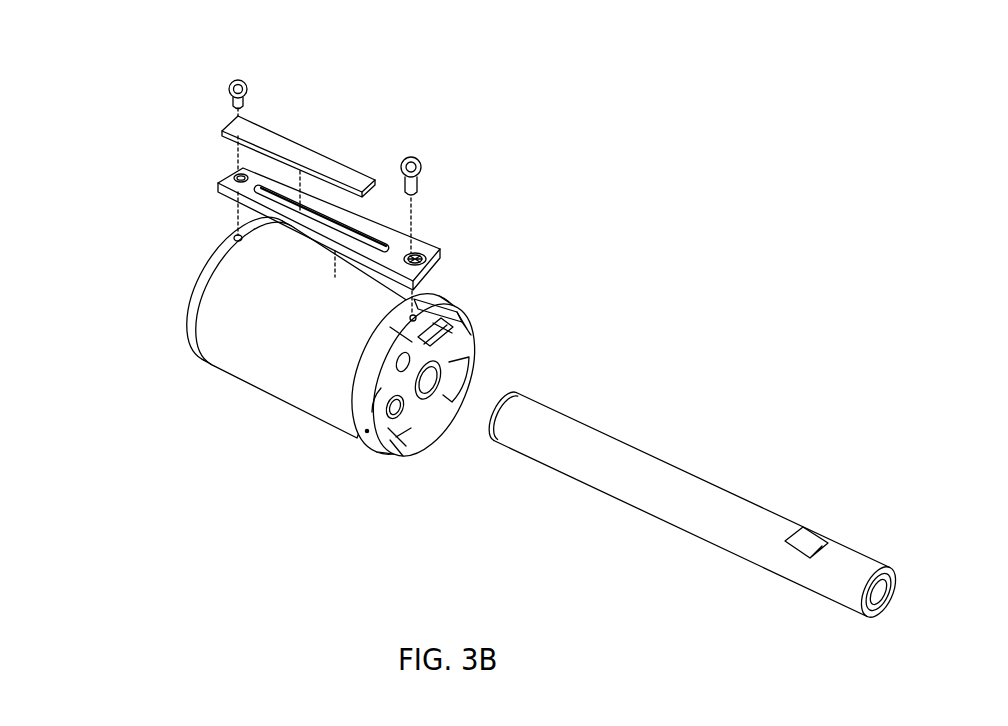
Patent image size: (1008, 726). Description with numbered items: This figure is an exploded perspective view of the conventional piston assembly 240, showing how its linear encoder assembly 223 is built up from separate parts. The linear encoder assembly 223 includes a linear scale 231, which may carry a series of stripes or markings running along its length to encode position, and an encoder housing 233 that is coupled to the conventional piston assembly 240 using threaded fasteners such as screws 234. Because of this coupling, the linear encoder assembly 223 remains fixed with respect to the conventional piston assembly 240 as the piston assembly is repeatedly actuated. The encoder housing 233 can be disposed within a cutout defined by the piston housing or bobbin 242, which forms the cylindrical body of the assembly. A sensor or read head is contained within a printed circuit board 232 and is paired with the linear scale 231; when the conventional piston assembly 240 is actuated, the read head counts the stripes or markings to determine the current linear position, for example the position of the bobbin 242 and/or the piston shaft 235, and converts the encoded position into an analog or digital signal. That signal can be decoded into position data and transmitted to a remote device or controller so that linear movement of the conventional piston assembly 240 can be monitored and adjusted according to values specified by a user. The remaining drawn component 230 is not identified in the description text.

The conventional piston assembly 240 is at (146, 116).
The linear encoder assembly 223 is at (390, 111).
The motor 230 is at (263, 365).
The linear scale 231 is at (271, 144).
The printed circuit board 232 is at (466, 315).
The encoder housing 233 is at (428, 249).
The screws 234 is at (245, 82).
The piston shaft 235 is at (556, 436).
The piston housing or bobbin 242 is at (369, 432).